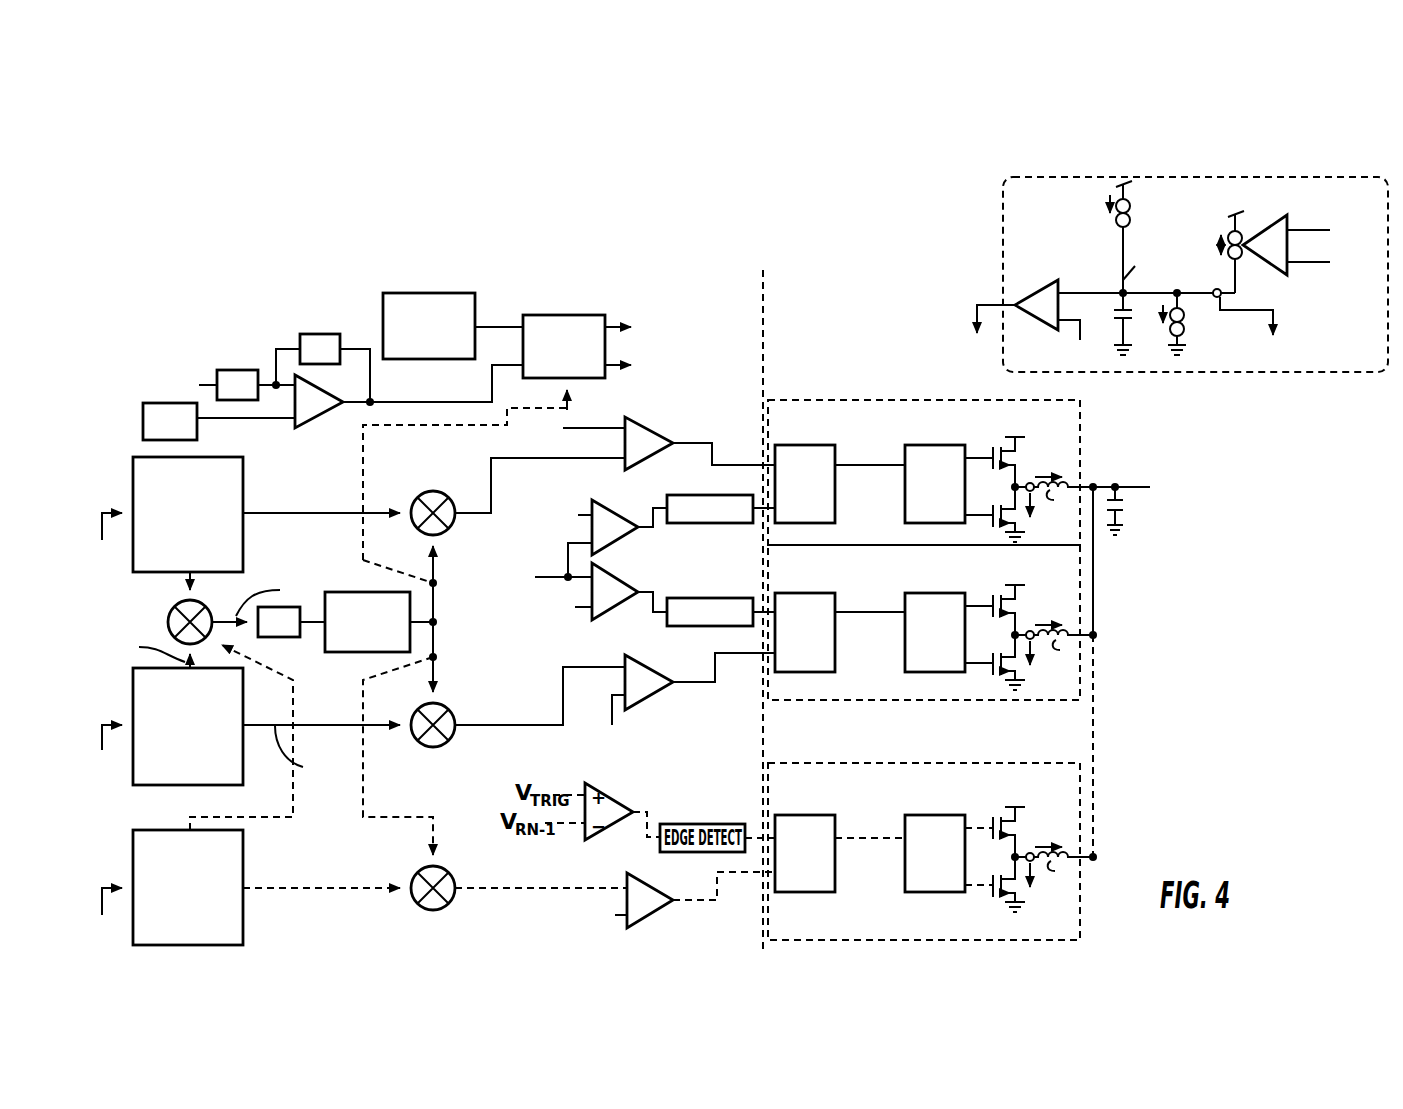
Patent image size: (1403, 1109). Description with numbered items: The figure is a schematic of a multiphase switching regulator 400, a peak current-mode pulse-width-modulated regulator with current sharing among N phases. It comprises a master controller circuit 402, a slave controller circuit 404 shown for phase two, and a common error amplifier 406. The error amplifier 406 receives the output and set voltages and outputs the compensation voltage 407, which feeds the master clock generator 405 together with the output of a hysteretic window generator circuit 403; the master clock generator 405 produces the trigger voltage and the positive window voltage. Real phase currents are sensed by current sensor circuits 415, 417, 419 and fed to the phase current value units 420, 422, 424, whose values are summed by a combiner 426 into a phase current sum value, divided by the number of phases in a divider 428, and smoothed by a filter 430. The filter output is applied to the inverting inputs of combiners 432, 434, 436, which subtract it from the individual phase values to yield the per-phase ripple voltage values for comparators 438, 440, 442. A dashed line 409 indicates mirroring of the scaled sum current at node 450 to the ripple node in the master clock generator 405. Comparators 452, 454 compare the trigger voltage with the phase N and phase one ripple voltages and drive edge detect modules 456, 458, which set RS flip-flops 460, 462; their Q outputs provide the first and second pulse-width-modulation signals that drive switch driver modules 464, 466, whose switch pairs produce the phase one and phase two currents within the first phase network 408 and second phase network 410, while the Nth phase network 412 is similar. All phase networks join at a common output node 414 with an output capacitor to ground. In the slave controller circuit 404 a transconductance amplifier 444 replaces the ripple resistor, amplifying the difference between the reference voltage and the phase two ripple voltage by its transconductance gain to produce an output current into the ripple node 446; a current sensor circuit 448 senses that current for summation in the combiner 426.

The multiphase switching regulator 400 is at (724, 206).
The master controller circuit 402 is at (727, 323).
The hysteretic window generator circuit 403 is at (416, 293).
The slave controller circuit 404 is at (1222, 196).
The master clock generator 405 is at (557, 315).
The error amplifier 406 is at (318, 298).
The compensation voltage 407 is at (457, 385).
The first phase network 408 is at (822, 441).
The dashed line 409 is at (572, 409).
The second phase network 410 is at (822, 589).
The Nth phase network 412 is at (822, 811).
The common output node 414 is at (1093, 484).
The current sensor circuit 415 is at (1032, 482).
The current sensor circuit 417 is at (1032, 630).
The current sensor circuit 419 is at (1030, 852).
The phase 1 current value unit 420 is at (243, 494).
The phase 2 current value unit 422 is at (243, 738).
The phase N current value unit 424 is at (243, 871).
The combiner 426 is at (210, 604).
The divider 428 is at (295, 637).
The filter 430 is at (346, 592).
The combiner 432 is at (437, 490).
The combiner 434 is at (440, 748).
The combiner 436 is at (453, 904).
The comparator 438 is at (648, 447).
The comparator 440 is at (648, 688).
The comparator 442 is at (655, 905).
The transconductance amplifier 444 is at (1275, 220).
The ripple node 446 is at (1123, 292).
The current sensor circuit 448 is at (1222, 294).
The node 450 is at (438, 590).
The comparator 452 is at (612, 514).
The comparator 454 is at (612, 591).
The edge detect module 456 is at (735, 524).
The edge detect module 458 is at (688, 598).
The RS flip-flop 460 is at (830, 445).
The RS flip-flop 462 is at (830, 593).
The switch driver module 464 is at (940, 450).
The switch driver module 466 is at (930, 600).